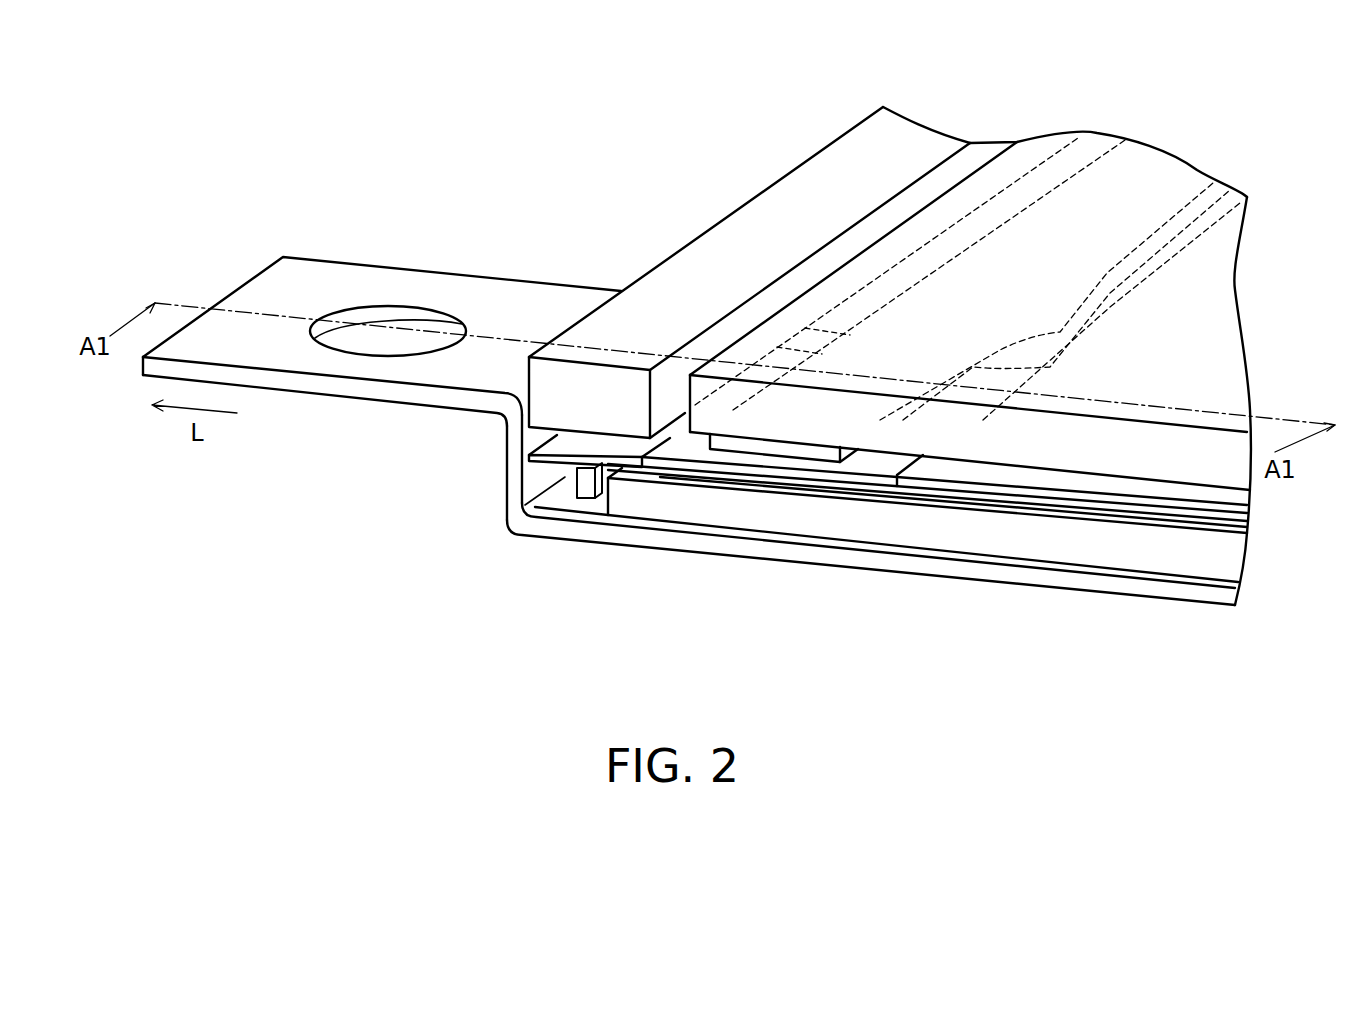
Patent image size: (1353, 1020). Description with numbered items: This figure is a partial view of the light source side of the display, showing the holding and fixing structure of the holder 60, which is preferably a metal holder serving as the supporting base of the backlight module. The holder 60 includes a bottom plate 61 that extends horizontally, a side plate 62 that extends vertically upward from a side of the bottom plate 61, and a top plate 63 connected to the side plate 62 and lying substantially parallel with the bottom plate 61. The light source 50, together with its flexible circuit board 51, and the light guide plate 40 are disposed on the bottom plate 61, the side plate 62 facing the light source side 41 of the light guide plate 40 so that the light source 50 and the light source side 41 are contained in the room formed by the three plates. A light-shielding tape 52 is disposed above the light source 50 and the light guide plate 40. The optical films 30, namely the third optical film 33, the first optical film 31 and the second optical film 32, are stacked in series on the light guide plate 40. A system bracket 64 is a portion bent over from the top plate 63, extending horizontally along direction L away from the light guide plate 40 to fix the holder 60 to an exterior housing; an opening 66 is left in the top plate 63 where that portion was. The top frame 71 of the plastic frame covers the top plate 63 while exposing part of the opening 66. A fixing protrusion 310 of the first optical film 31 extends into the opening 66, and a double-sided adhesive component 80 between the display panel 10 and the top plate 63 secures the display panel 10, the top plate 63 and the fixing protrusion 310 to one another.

The display panel 10 is at (1232, 468).
The optical films 30 is at (938, 607).
The first optical film 31 is at (1170, 517).
The second optical film 32 is at (1210, 512).
The third optical film 33 is at (1125, 527).
The fixing protrusion 310 is at (807, 469).
The light guide plate 40 is at (1022, 537).
The light source side 41 is at (630, 495).
The light source 50 is at (587, 494).
The flexible circuit board 51 is at (677, 532).
The light-shielding tape 52 is at (547, 466).
The holder 60 is at (689, 432).
The bottom plate 61 is at (588, 512).
The side plate 62 is at (513, 497).
The top plate 63 is at (883, 300).
The system bracket 64 is at (285, 352).
The opening 66 is at (810, 345).
The top frame 71 is at (767, 220).
The double-sided adhesive component 80 is at (777, 452).